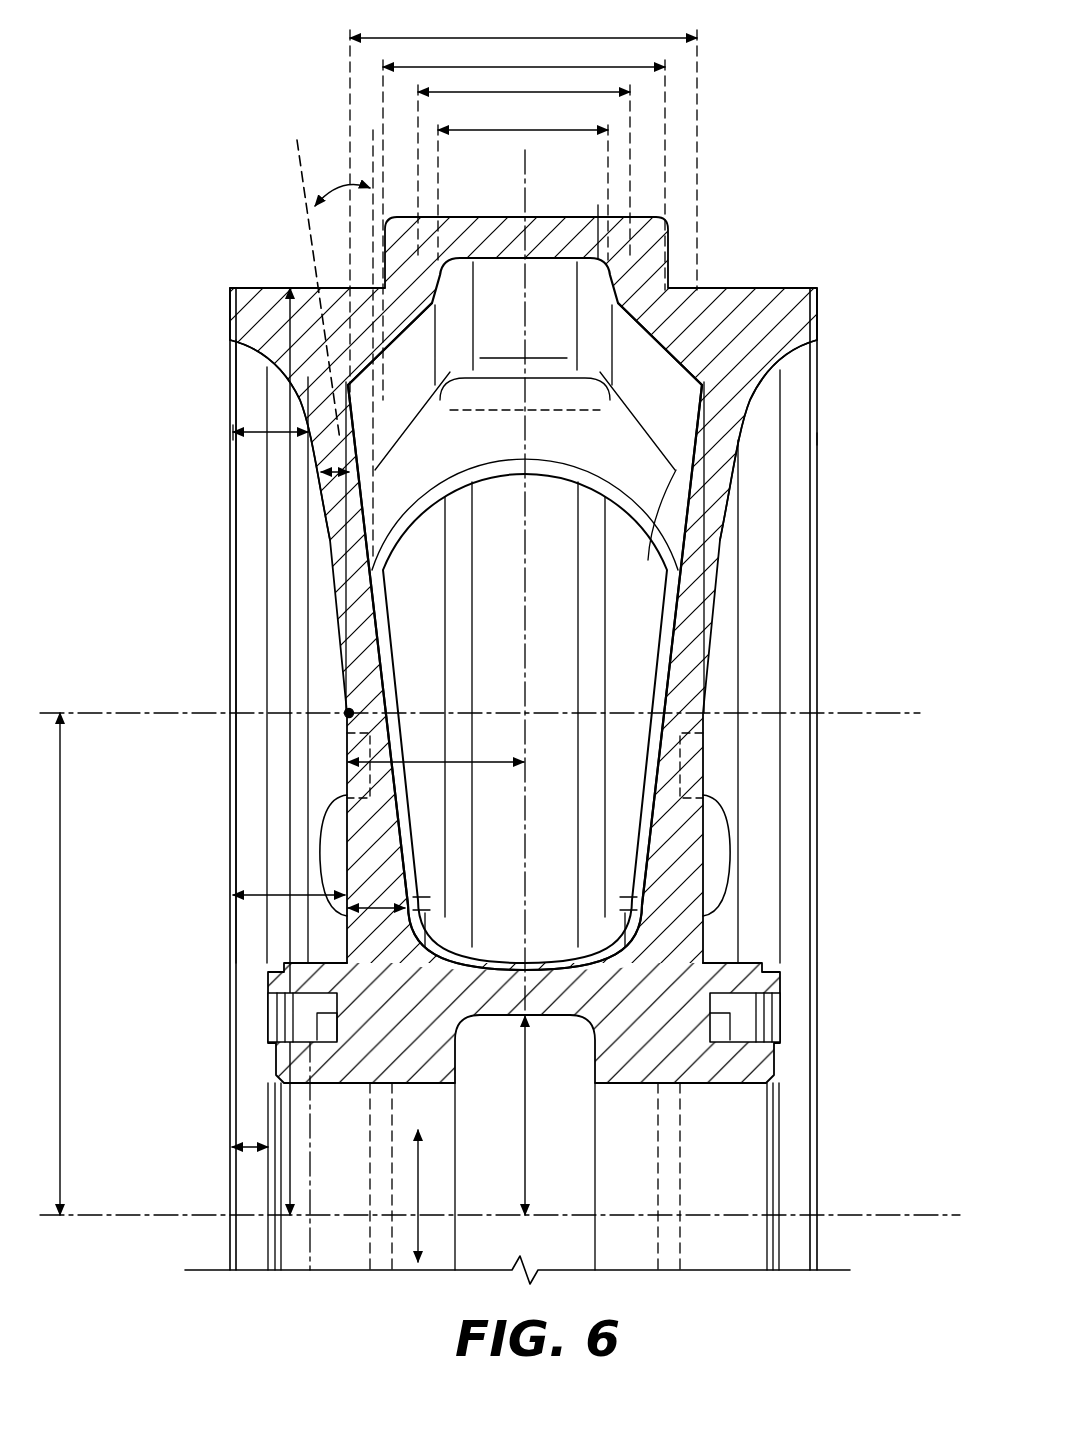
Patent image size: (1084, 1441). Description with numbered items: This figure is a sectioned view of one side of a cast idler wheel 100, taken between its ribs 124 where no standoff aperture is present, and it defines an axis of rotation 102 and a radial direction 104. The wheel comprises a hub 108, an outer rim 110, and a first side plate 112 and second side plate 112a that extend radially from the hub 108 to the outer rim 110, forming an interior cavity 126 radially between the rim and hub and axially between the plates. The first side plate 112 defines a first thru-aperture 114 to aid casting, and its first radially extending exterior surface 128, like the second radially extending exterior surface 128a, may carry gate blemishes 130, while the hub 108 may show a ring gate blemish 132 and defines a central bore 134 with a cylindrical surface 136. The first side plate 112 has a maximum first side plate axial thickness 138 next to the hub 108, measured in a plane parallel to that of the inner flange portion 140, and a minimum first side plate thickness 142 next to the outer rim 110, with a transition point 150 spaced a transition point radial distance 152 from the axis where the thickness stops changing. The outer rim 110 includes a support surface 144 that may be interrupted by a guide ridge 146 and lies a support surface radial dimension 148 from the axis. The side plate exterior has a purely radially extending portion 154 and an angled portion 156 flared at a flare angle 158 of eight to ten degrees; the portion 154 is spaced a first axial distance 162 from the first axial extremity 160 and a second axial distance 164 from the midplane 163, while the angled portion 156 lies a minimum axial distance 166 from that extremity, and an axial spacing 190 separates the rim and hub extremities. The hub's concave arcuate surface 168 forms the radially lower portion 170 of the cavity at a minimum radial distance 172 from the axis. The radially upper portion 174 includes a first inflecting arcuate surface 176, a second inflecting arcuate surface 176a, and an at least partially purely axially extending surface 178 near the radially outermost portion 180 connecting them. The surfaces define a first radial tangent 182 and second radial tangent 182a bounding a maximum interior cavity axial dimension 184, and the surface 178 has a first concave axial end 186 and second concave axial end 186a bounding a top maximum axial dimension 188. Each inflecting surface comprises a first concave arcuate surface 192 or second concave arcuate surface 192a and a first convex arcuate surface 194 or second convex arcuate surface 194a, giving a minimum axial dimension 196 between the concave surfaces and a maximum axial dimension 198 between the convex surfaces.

The idler wheel 100 is at (790, 126).
The axis of rotation 102 is at (915, 1218).
The radial direction 104 is at (426, 1242).
The hub 108 is at (786, 1185).
The outer rim 110 is at (820, 284).
The first side plate 112 is at (344, 526).
The second side plate 112a is at (686, 855).
The first thru-aperture 114 is at (338, 869).
The ribs 124 is at (690, 480).
The interior cavity 126 is at (603, 650).
The first radially extending exterior surface 128 is at (316, 645).
The second radially extending exterior surface 128a is at (725, 738).
The gate blemishes 130 is at (690, 757).
The ring gate blemish 132 is at (666, 1252).
The central bore 134 is at (310, 1242).
The cylindrical surface 136 is at (366, 1134).
The maximum first side plate axial thickness 138 is at (383, 910).
The inner flange portion 140 is at (740, 1076).
The minimum first side plate thickness 142 is at (345, 474).
The support surface 144 is at (300, 330).
The guide ridge 146 is at (596, 210).
The support surface radial dimension 148 is at (290, 333).
The transition point 150 is at (348, 715).
The transition point radial distance 152 is at (63, 905).
The purely radially extending portion 154 is at (700, 790).
The angled portion 156 is at (727, 512).
The flare angle 158 is at (366, 190).
The first axial extremity 160 is at (245, 300).
The first axial distance 162 is at (278, 897).
The midplane 163 is at (510, 264).
The second axial distance 164 is at (488, 766).
The minimum axial distance 166 is at (263, 433).
The concave arcuate surface 168 is at (566, 976).
The radially lower portion 170 is at (564, 985).
The minimum radial distance 172 is at (528, 1188).
The radially upper portion 174 is at (538, 254).
The first inflecting arcuate surface 176 is at (392, 343).
The second inflecting arcuate surface 176a is at (656, 350).
The at least partially purely axially extending surface 178 is at (483, 215).
The radially outermost portion 180 is at (552, 138).
The first radial tangent 182 is at (352, 398).
The second radial tangent 182a is at (700, 405).
The maximum interior cavity axial dimension 184 is at (683, 36).
The first concave axial end 186 is at (462, 256).
The second concave axial end 186a is at (588, 258).
The top maximum axial dimension 188 is at (610, 130).
The axial spacing 190 is at (233, 1150).
The first concave arcuate surface 192 is at (360, 383).
The second concave arcuate surface 192a is at (702, 395).
The first convex arcuate surface 194 is at (314, 204).
The second convex arcuate surface 194a is at (622, 310).
The minimum axial dimension 196 is at (385, 66).
The maximum axial dimension 198 is at (632, 92).